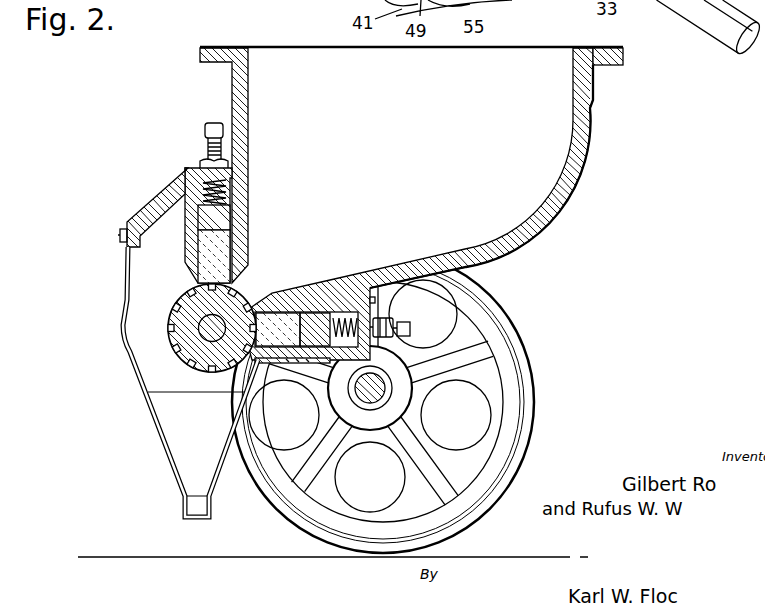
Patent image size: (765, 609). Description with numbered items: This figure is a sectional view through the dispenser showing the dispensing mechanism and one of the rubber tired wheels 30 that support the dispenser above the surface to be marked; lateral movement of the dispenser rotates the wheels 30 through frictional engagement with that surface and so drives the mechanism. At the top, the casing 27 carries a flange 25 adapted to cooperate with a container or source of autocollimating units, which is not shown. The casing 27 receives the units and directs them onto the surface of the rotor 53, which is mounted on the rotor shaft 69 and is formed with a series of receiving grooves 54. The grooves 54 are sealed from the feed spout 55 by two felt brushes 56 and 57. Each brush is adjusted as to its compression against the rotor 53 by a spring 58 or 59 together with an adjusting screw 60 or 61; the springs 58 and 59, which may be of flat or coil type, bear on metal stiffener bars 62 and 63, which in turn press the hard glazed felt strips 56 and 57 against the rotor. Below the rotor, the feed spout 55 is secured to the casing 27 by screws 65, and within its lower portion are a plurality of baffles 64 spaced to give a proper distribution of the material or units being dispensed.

The flange 25 is at (608, 68).
The casing 27 is at (566, 198).
The wheels 30 is at (524, 398).
The rotor 53 is at (168, 316).
The receiving grooves 54 is at (180, 296).
The feed spout 55 is at (160, 430).
The felt brush 56 is at (207, 252).
The felt brush 57 is at (273, 362).
The spring 58 is at (190, 169).
The spring 59 is at (375, 302).
The adjusting screw 60 is at (214, 123).
The adjusting screw 61 is at (410, 329).
The metal stiffener bar 62 is at (162, 192).
The metal stiffener bar 63 is at (318, 310).
The baffles 64 is at (193, 447).
The screws 65 is at (292, 363).
The rotor shaft 69 is at (205, 333).